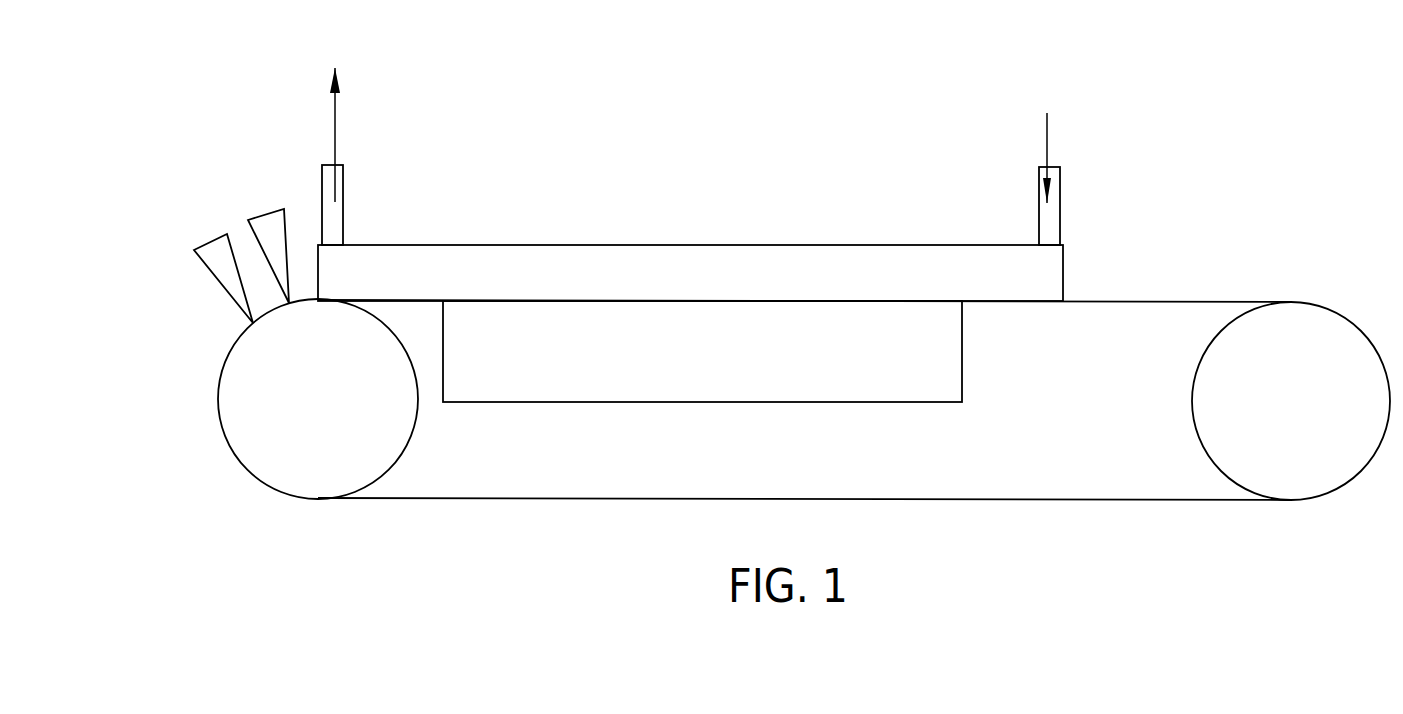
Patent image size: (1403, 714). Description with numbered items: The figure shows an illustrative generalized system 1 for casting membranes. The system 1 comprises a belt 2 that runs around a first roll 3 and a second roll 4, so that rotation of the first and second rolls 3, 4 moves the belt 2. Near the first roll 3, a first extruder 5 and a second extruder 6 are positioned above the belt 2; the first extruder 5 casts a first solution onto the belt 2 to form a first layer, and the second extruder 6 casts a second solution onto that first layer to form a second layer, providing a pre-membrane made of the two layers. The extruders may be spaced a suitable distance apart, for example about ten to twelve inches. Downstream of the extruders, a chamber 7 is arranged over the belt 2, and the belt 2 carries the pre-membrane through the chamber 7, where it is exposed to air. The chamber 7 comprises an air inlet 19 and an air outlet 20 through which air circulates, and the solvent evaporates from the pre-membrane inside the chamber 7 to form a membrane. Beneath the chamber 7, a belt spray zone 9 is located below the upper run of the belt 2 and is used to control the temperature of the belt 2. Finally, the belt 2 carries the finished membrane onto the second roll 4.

The system 1 is at (878, 118).
The belt 2 is at (773, 498).
The first roll 3 is at (335, 405).
The second roll 4 is at (1313, 407).
The first extruder 5 is at (225, 288).
The second extruder 6 is at (262, 213).
The chamber 7 is at (720, 285).
The belt spray zone 9 is at (720, 377).
The air inlet 19 is at (1047, 150).
The air outlet 20 is at (335, 137).